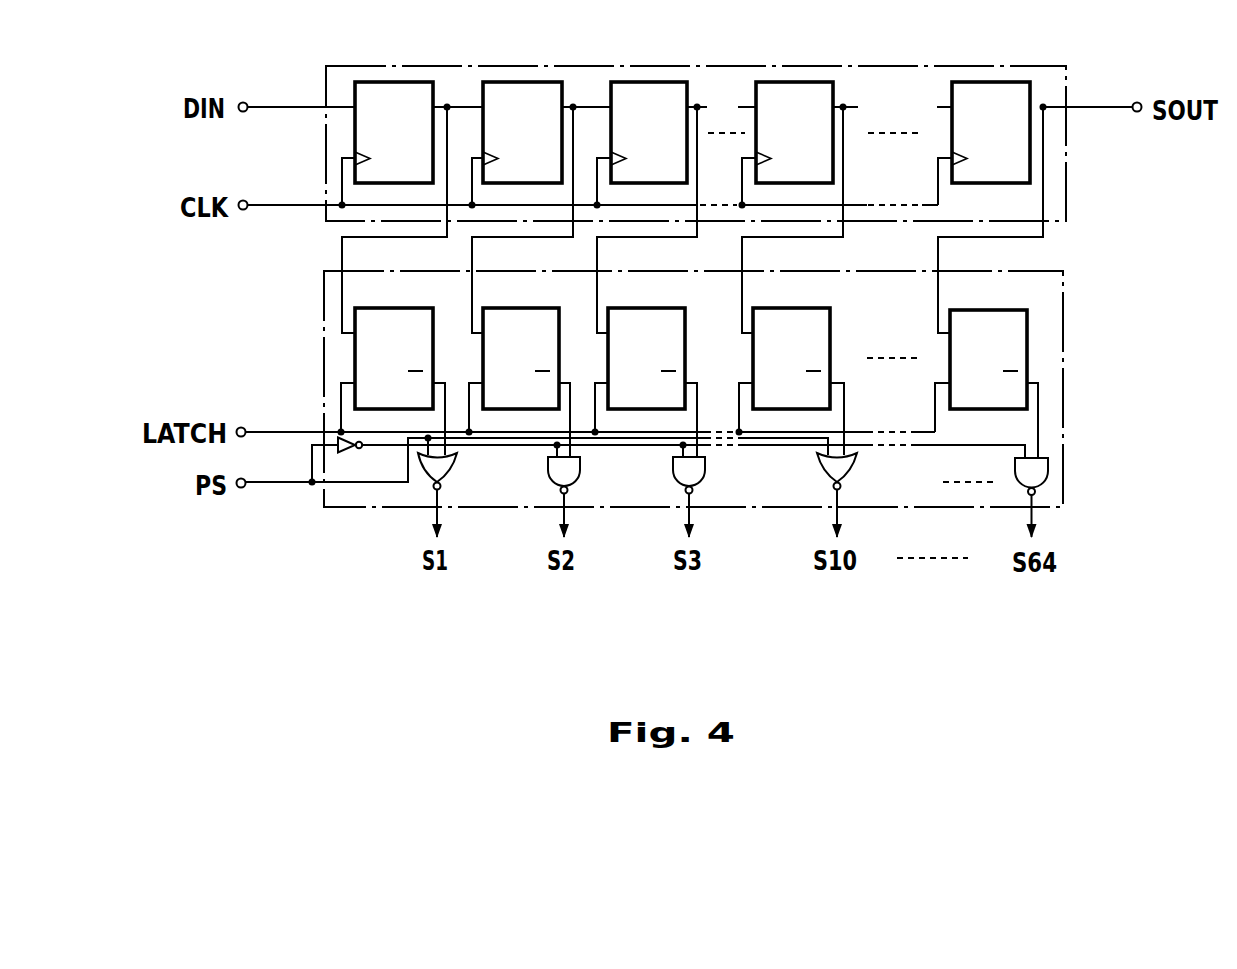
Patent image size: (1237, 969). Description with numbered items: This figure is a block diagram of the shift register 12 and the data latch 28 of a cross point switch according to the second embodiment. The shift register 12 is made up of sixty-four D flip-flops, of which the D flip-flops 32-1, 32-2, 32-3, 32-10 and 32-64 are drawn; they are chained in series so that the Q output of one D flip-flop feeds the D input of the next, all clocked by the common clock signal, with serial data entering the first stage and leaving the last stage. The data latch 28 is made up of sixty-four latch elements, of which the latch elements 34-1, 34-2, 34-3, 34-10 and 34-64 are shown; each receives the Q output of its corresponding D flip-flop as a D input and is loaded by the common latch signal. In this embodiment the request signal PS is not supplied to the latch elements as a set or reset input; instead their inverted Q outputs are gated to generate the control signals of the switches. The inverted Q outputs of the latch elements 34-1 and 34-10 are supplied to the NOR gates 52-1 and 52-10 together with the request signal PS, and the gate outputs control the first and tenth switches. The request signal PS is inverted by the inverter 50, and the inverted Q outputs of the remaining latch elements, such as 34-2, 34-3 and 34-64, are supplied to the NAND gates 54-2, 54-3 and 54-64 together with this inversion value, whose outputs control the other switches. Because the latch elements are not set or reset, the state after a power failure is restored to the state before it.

The shift register 12 is at (887, 66).
The data latch 28 is at (1063, 325).
The D flip-flop 32-1 is at (392, 82).
The D flip-flop 32-2 is at (520, 82).
The D flip-flop 32-3 is at (648, 82).
The D flip-flop 32-10 is at (793, 82).
The D flip-flop 32-64 is at (990, 82).
The latch element 34-1 is at (369, 308).
The latch element 34-2 is at (497, 308).
The latch element 34-3 is at (622, 308).
The latch element 34-10 is at (768, 308).
The latch element 34-64 is at (967, 296).
The inverter 50 is at (359, 449).
The NOR gate 52-1 is at (454, 468).
The NOR gate 52-10 is at (854, 468).
The NAND gate 54-2 is at (580, 474).
The NAND gate 54-3 is at (705, 474).
The NAND gate 54-64 is at (1048, 482).